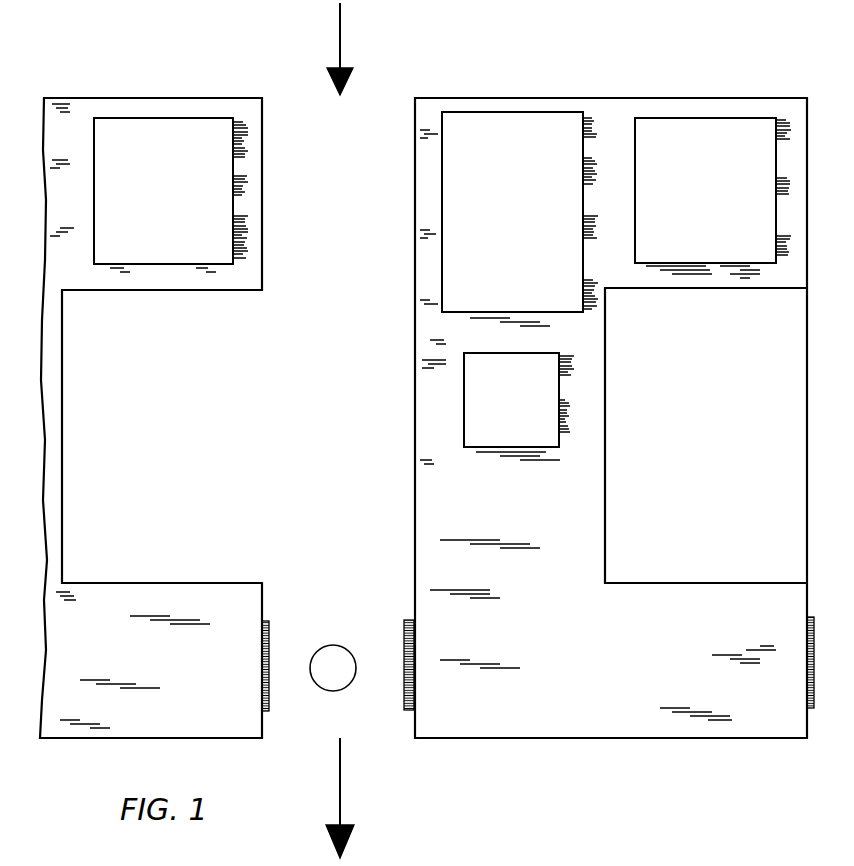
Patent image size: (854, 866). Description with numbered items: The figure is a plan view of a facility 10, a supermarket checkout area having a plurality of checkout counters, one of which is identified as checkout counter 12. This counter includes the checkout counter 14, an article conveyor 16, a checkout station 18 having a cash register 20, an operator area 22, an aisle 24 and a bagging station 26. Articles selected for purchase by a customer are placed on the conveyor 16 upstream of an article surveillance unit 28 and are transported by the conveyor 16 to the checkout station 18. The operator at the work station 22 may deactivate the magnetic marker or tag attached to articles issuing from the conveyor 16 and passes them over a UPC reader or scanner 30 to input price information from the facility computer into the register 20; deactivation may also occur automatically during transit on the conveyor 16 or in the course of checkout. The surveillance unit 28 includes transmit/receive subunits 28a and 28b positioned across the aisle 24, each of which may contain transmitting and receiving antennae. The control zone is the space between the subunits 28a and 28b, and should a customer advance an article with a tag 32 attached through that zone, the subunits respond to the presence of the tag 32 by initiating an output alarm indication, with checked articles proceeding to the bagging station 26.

The facility 10 is at (480, 89).
The checkout counter 12 is at (682, 98).
The checkout counter 14 is at (438, 346).
The article conveyor 16 is at (520, 272).
The checkout station 18 is at (684, 282).
The cash register 20 is at (642, 218).
The operator area 22 is at (723, 426).
The aisle 24 is at (358, 282).
The bagging station 26 is at (683, 669).
The article surveillance unit 28 is at (377, 633).
The transmit/receive subunit 28a is at (268, 690).
The transmit/receive subunit 28b is at (404, 690).
The UPC reader or scanner 30 is at (462, 390).
The tag 32 is at (313, 690).